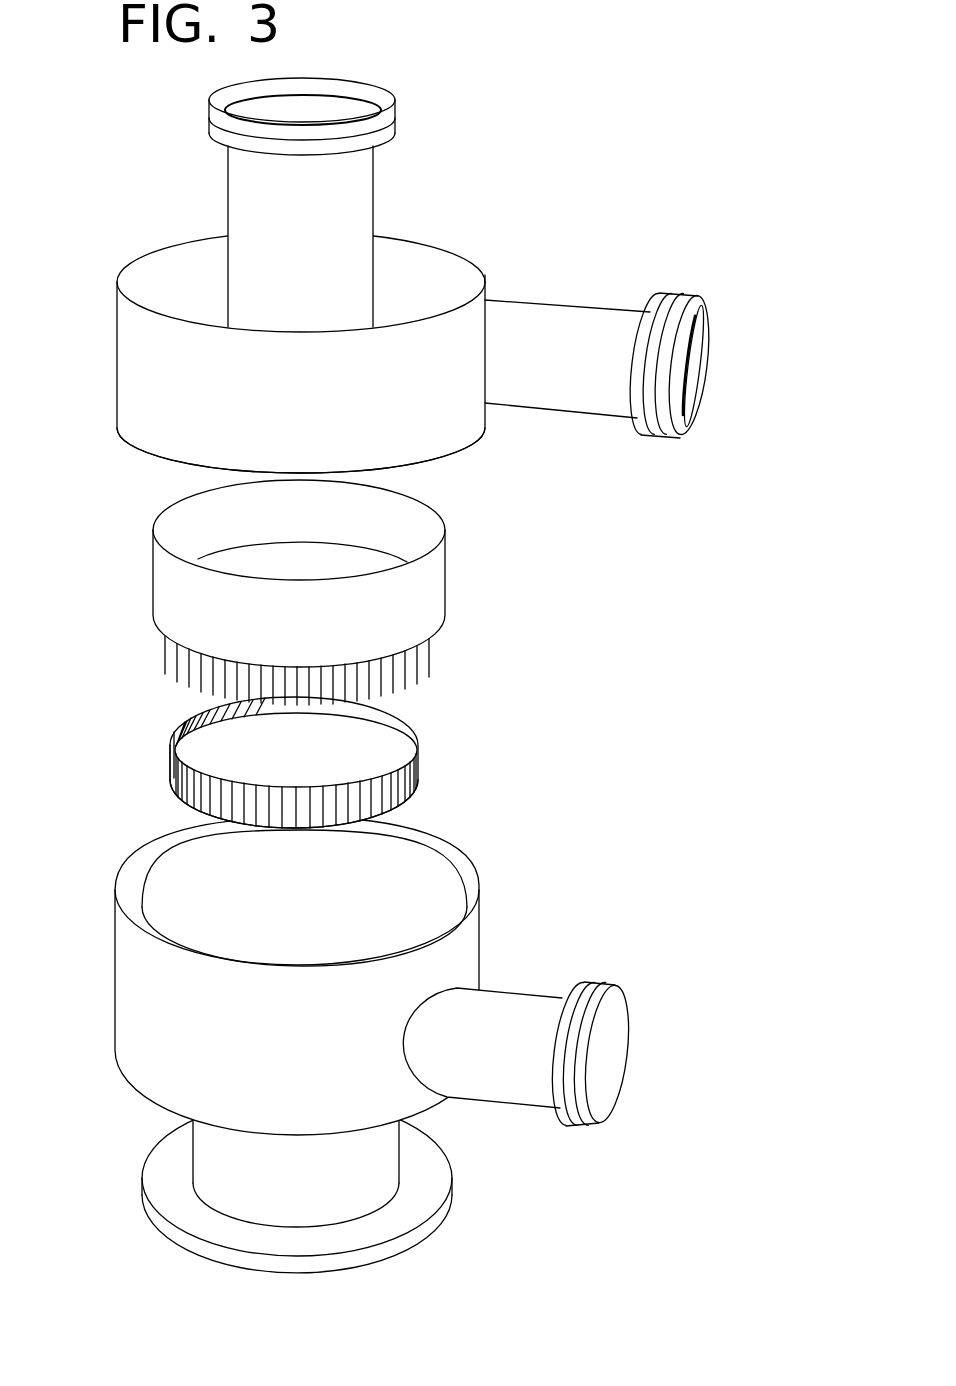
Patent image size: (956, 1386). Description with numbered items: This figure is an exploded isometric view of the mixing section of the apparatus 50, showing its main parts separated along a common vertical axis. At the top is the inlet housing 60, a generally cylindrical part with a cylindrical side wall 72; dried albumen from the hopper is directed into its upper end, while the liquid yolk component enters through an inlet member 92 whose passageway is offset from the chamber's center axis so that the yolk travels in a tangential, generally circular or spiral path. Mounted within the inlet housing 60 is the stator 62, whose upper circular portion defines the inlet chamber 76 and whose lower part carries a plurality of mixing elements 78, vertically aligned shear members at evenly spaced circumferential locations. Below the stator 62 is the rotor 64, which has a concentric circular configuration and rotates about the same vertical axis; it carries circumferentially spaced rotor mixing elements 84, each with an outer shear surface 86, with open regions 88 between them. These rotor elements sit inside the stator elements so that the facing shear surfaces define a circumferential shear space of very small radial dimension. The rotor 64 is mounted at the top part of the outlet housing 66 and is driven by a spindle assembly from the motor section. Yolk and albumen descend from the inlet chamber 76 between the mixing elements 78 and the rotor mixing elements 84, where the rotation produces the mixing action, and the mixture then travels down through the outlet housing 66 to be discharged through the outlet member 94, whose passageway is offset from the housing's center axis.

The apparatus 50 is at (548, 758).
The inlet housing 60 is at (452, 276).
The stator 62 is at (347, 592).
The rotor 64 is at (277, 765).
The outlet housing 66 is at (381, 1045).
The cylindrical side wall 72 is at (483, 437).
The inlet chamber 76 is at (367, 540).
The mixing elements 78 is at (408, 662).
The rotor mixing elements 84 is at (373, 783).
The outer shear surface 86 is at (183, 777).
The open regions 88 is at (230, 790).
The inlet member 92 is at (690, 358).
The outlet member 94 is at (525, 1015).